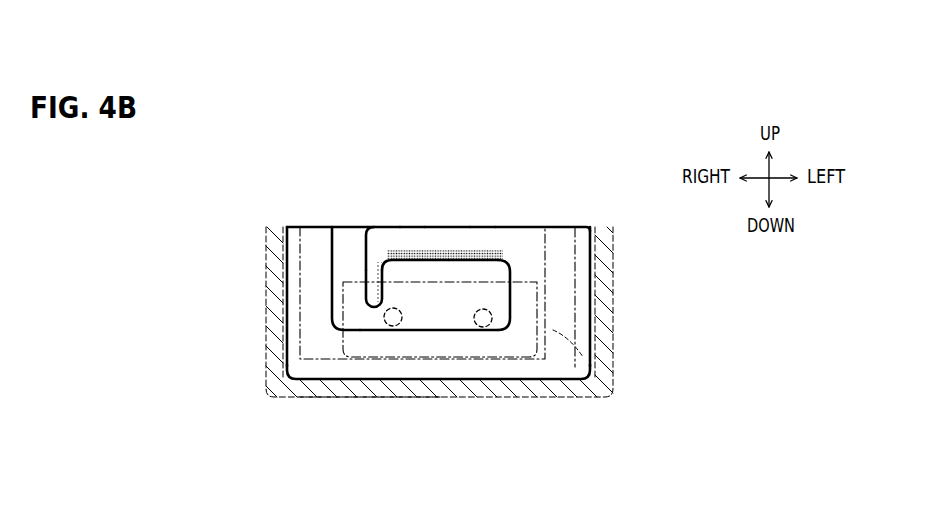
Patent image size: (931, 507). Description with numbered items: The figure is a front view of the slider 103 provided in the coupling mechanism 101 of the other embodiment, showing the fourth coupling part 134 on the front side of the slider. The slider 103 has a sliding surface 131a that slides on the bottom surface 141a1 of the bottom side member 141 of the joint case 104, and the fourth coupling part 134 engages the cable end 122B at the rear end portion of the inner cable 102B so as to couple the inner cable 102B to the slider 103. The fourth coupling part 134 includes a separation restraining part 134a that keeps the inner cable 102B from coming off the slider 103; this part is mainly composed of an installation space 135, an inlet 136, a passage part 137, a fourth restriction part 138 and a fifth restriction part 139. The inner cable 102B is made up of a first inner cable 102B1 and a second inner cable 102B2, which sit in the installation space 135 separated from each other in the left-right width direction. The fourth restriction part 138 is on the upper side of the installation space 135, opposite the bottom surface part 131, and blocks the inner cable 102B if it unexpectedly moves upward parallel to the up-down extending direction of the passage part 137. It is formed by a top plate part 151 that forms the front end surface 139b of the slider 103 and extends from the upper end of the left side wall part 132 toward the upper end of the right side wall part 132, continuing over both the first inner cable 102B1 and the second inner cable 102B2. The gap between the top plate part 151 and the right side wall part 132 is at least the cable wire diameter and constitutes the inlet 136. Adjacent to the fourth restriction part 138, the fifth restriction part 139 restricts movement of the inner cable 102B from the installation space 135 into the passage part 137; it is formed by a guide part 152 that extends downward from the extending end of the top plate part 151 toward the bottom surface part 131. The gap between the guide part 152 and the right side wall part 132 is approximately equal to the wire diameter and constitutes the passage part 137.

The coupling mechanism 101 is at (634, 120).
The slider 103 is at (556, 148).
The joint case 104 is at (387, 330).
The cable end 122B is at (607, 375).
The bottom surface part 131 is at (430, 383).
The sliding surface 131a is at (548, 384).
The side wall part 132 is at (284, 260).
The fourth coupling part 134 is at (463, 196).
The separation restraining part 134a is at (531, 206).
The installation space 135 is at (512, 301).
The inlet 136 is at (341, 232).
The passage part 137 is at (355, 226).
The fourth restriction part 138 is at (450, 253).
The fifth restriction part 139 is at (384, 293).
The front end surface 139b is at (315, 343).
The bottom side member 141 is at (265, 234).
The bottom surface 141a1 is at (323, 397).
The top plate part 151 is at (413, 225).
The guide part 152 is at (358, 291).
The inner cable 102B is at (429, 382).
The first inner cable 102B1 is at (512, 333).
The second inner cable 102B2 is at (357, 320).